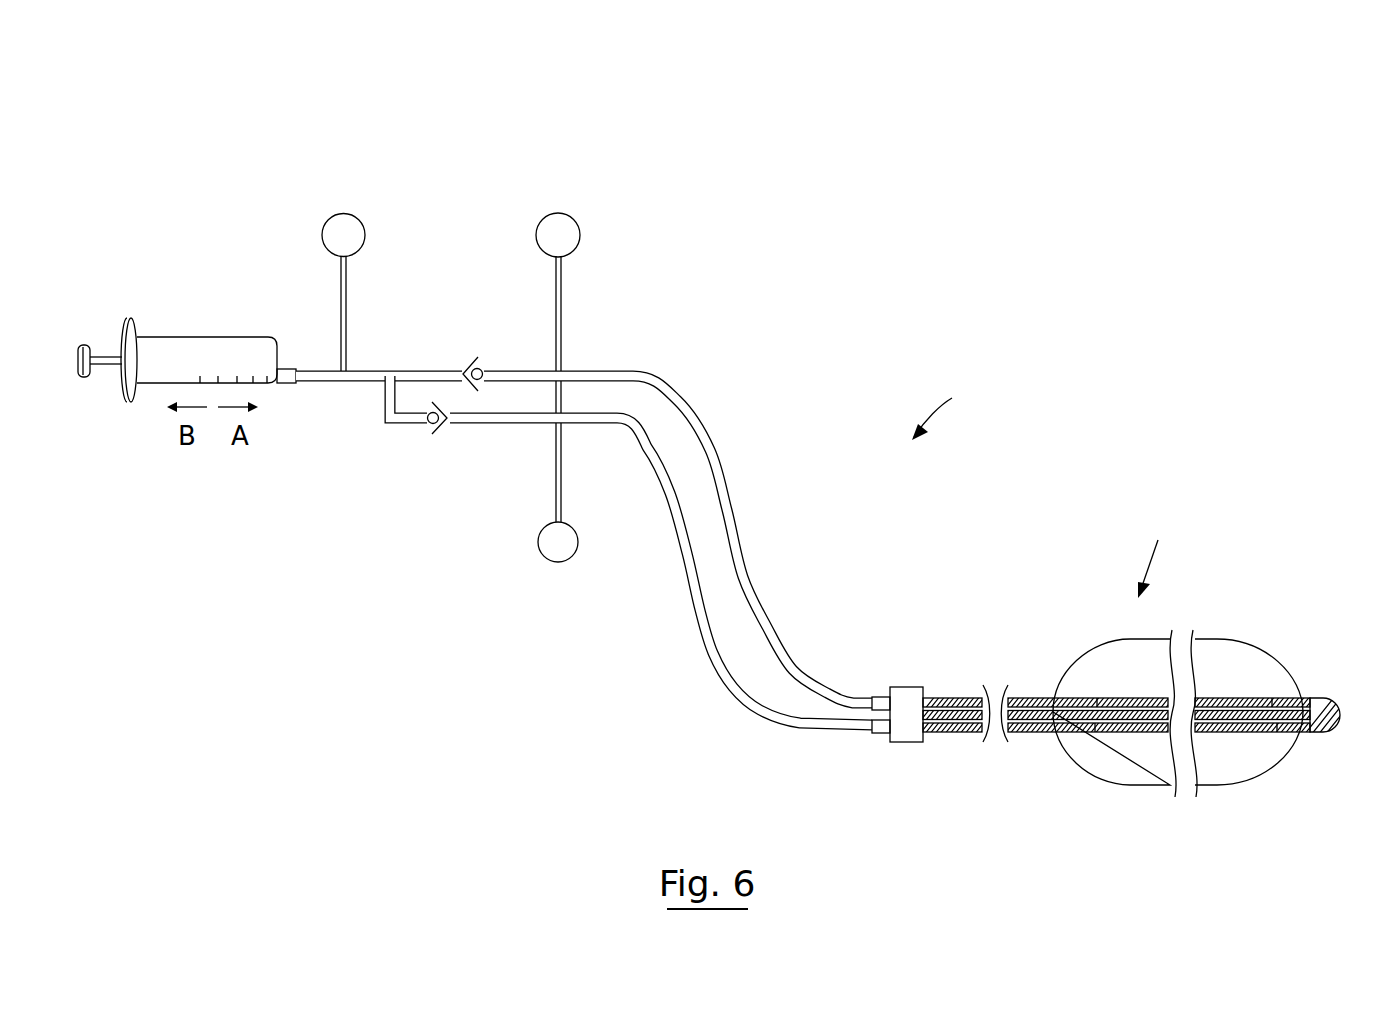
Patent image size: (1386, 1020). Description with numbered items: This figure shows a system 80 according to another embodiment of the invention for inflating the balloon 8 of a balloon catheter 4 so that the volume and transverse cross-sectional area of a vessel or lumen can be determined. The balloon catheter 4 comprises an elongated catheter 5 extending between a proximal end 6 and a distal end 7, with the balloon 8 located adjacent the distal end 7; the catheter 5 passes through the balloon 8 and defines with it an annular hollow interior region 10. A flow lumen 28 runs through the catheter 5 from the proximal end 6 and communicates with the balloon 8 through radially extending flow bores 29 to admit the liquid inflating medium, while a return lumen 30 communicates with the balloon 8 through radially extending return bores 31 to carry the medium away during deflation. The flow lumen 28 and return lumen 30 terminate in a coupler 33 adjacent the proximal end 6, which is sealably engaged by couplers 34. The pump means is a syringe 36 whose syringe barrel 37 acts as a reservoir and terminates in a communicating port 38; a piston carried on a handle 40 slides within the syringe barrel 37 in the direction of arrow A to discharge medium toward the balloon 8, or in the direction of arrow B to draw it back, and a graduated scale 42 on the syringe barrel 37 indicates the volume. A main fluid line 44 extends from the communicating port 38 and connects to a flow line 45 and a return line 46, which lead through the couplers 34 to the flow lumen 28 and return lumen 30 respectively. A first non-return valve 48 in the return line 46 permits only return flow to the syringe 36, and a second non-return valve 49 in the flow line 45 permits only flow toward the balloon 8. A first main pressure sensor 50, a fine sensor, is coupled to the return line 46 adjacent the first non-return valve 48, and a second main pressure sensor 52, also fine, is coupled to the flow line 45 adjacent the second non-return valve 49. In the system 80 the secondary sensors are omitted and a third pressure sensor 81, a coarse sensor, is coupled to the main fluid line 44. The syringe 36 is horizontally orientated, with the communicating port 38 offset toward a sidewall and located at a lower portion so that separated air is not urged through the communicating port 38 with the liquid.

The balloon catheter 4 is at (1154, 553).
The elongated catheter 5 is at (957, 697).
The proximal end 6 is at (945, 732).
The distal end 7 is at (1341, 710).
The balloon 8 is at (1227, 640).
The annular hollow interior region 10 is at (1212, 765).
The flow lumen 28 is at (1114, 711).
The flow bores 29 is at (1097, 700).
The return lumen 30 is at (978, 723).
The return bores 31 is at (1095, 733).
The coupler 33 is at (903, 742).
The couplers 34 is at (880, 697).
The syringe 36 is at (167, 347).
The syringe barrel 37 is at (203, 347).
The communicating port 38 is at (284, 367).
The handle 40 is at (93, 348).
The graduated scale 42 is at (253, 382).
The main fluid line 44 is at (325, 383).
The flow line 45 is at (668, 383).
The return line 46 is at (723, 685).
The first non-return valve 48 is at (440, 425).
The second non-return valve 49 is at (473, 363).
The first main pressure sensor 50 is at (576, 550).
The second main pressure sensor 52 is at (559, 213).
The system 80 is at (951, 406).
The third pressure sensor 81 is at (343, 213).